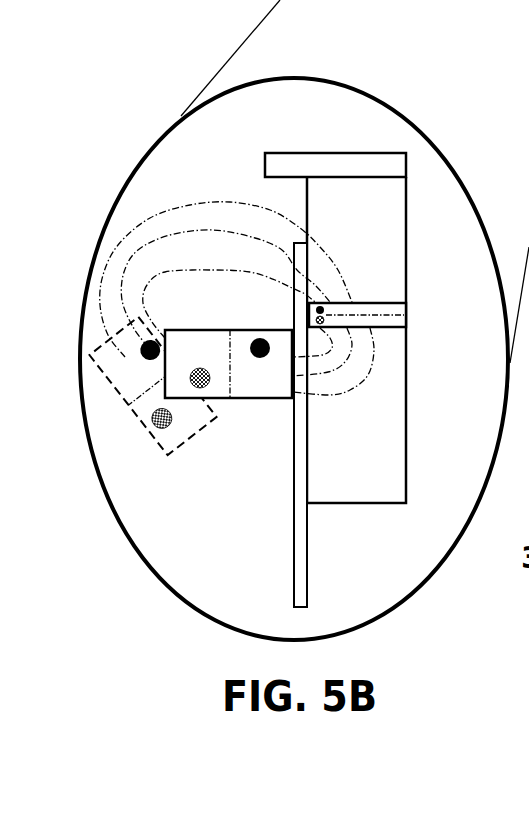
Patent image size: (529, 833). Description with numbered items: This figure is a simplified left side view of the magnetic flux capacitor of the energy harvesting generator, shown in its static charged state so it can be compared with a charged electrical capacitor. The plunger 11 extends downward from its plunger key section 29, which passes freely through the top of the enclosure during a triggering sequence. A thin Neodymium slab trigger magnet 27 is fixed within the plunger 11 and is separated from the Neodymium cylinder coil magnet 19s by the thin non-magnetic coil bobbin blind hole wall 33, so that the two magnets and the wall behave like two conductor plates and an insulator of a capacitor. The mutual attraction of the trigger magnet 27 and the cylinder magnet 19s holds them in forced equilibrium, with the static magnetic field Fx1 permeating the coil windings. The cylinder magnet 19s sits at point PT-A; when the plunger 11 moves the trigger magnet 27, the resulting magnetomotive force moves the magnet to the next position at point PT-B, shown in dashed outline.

The plunger 11 is at (365, 245).
The plunger key section 29 is at (335, 153).
The trigger magnet 27 is at (393, 303).
The coil bobbin blind hole wall 33 is at (298, 495).
The Neodymium cylinder coil magnet 19s is at (221, 336).
The magnetic field Fx1 is at (235, 202).
The point PT-A is at (154, 326).
The point PT-B is at (138, 405).